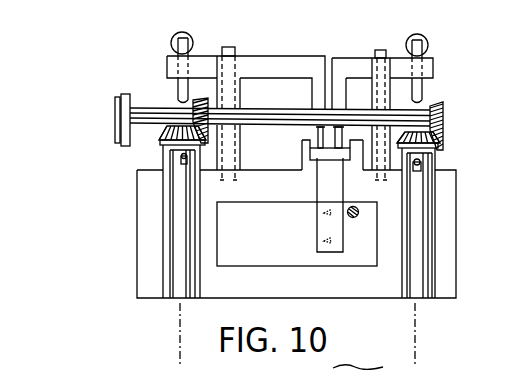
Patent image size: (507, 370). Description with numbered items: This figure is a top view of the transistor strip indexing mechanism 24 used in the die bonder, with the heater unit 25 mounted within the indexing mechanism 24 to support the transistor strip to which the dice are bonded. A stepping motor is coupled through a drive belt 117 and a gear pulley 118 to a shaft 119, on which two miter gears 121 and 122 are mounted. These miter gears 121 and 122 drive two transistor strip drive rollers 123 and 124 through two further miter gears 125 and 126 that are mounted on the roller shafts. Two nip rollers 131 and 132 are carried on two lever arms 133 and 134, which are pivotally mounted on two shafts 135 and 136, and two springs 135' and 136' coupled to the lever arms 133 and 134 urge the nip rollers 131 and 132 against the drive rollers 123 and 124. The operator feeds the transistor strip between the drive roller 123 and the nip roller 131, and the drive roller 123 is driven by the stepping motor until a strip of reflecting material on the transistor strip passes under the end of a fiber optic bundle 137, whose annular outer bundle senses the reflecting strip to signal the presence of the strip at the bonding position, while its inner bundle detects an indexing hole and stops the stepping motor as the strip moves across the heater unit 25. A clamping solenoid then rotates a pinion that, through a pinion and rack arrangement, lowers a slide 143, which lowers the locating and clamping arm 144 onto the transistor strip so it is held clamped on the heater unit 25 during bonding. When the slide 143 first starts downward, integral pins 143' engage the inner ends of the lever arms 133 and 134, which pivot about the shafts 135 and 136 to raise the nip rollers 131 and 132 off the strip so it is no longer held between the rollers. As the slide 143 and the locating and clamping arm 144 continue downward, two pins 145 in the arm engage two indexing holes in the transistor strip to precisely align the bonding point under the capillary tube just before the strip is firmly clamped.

The indexing mechanism 24 is at (137, 211).
The heater unit 25 is at (265, 266).
The drive belt 117 is at (116, 141).
The gear pulley 118 is at (126, 95).
The shaft 119 is at (163, 126).
The miter gear 121 is at (200, 97).
The miter gear 122 is at (443, 103).
The transistor strip drive roller 123 is at (163, 184).
The transistor strip drive roller 124 is at (435, 196).
The miter gear 125 is at (166, 144).
The miter gear 126 is at (440, 147).
The nip roller 131 is at (172, 263).
The nip roller 132 is at (431, 277).
The lever arm 133 is at (170, 63).
The lever arm 134 is at (396, 57).
The shaft 135 is at (248, 103).
The spring 135' is at (173, 55).
The shaft 136 is at (361, 102).
The spring 136' is at (438, 64).
The fiber optic bundle 137 is at (353, 218).
The slide 143 is at (312, 155).
The integral pins 143' is at (303, 137).
The locating and clamping arm 144 is at (317, 234).
The pins 145 is at (323, 241).